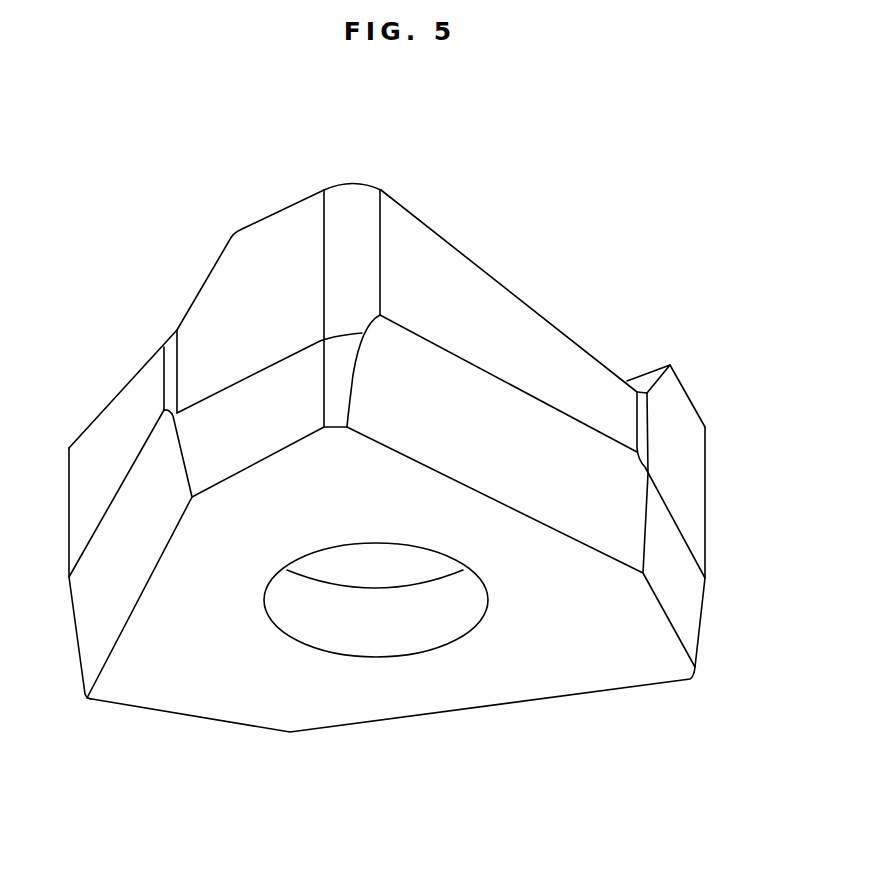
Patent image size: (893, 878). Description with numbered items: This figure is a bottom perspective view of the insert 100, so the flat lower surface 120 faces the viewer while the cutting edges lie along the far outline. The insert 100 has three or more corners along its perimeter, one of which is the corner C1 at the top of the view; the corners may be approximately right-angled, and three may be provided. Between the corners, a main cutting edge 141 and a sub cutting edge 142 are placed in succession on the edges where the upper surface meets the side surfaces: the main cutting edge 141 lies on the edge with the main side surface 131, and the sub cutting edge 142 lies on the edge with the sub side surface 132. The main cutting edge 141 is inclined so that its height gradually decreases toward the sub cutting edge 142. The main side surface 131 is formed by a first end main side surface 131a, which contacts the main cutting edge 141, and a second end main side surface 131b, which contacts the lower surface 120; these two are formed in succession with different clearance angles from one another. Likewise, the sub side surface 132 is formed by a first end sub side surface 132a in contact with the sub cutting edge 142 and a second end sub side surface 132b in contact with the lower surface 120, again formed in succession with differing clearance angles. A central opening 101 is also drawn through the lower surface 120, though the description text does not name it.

The insert 100 is at (523, 217).
The corner C1 is at (350, 182).
The fastening hole 101 is at (367, 618).
The lower surface 120 is at (258, 703).
The main side surface 131 is at (510, 812).
The first end main side surface 131a is at (522, 360).
The second end main side surface 131b is at (582, 508).
The sub side surface 132 is at (137, 812).
The first end sub side surface 132a is at (223, 360).
The second end sub side surface 132b is at (237, 448).
The main cutting edge 141 is at (117, 397).
The sub cutting edge 142 is at (272, 215).